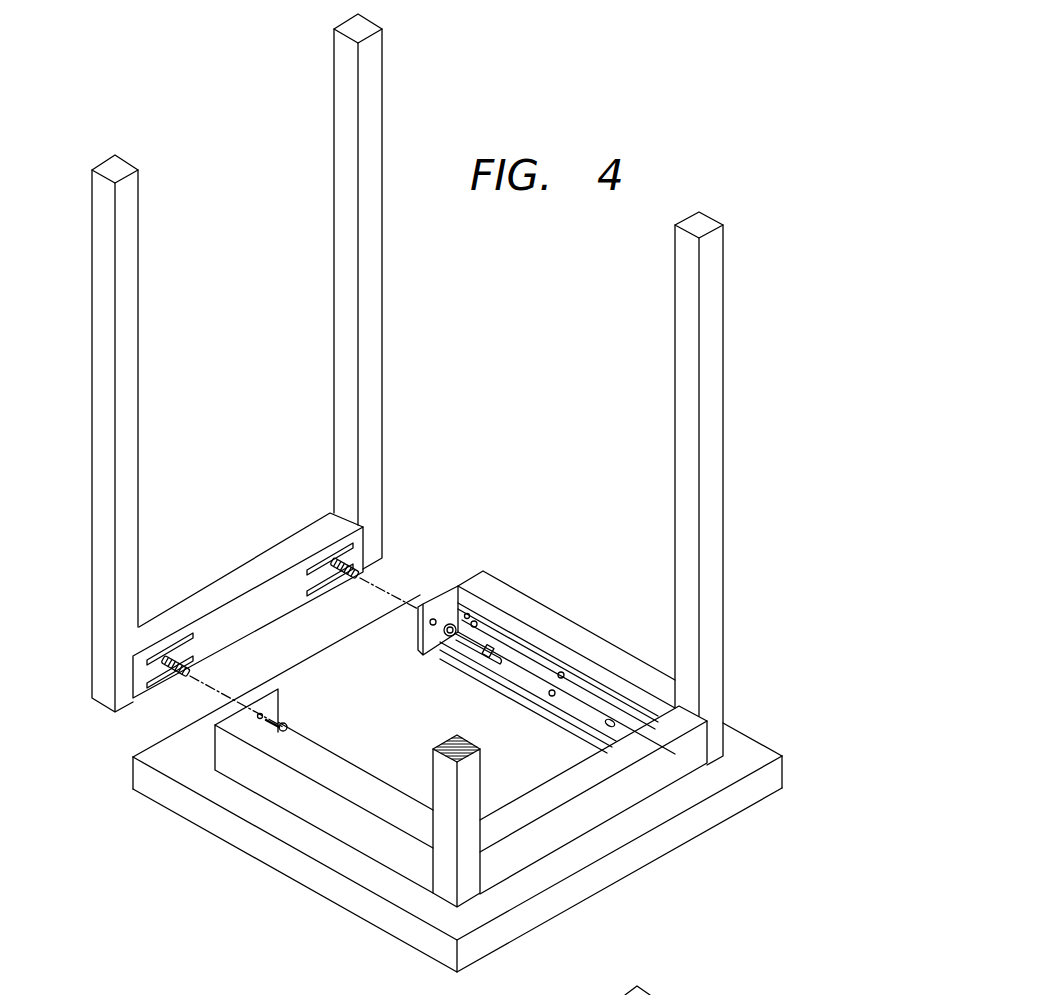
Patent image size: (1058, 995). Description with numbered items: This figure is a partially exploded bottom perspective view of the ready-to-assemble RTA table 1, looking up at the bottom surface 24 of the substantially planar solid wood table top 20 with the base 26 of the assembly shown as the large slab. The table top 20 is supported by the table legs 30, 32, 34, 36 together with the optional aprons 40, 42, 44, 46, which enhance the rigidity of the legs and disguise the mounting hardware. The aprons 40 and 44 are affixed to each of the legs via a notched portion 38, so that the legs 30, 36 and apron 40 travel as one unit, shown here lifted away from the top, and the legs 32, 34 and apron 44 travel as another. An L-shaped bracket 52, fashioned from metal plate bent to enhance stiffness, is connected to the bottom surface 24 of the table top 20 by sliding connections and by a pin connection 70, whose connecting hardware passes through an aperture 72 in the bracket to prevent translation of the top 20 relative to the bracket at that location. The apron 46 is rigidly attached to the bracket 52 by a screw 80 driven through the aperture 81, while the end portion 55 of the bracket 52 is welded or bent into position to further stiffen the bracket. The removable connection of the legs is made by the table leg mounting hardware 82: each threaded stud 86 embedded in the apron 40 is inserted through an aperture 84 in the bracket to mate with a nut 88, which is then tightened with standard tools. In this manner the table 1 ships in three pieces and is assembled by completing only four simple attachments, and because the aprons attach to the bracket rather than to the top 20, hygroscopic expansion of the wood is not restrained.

The RTA table 1 is at (173, 861).
The table top 20 is at (432, 790).
The bottom surface 24 is at (167, 753).
The bottom portion of base 26 is at (442, 952).
The table leg 30 is at (128, 321).
The table leg 32 is at (472, 838).
The table leg 34 is at (715, 363).
The table leg 36 is at (371, 348).
The notched portion 38 is at (365, 543).
The apron 40 is at (289, 602).
The apron 42 is at (302, 803).
The apron 44 is at (578, 825).
The apron 46 is at (588, 640).
The bracket 52 is at (543, 648).
The end portion 55 is at (427, 604).
The pin connection 70 is at (540, 693).
The aperture 72 is at (552, 698).
The screw 80 is at (477, 623).
The aperture 81 is at (468, 613).
The table leg mounting hardware 82 is at (213, 723).
The aperture 84 is at (435, 618).
The threaded stud 86 is at (333, 562).
The nut 88 is at (449, 637).